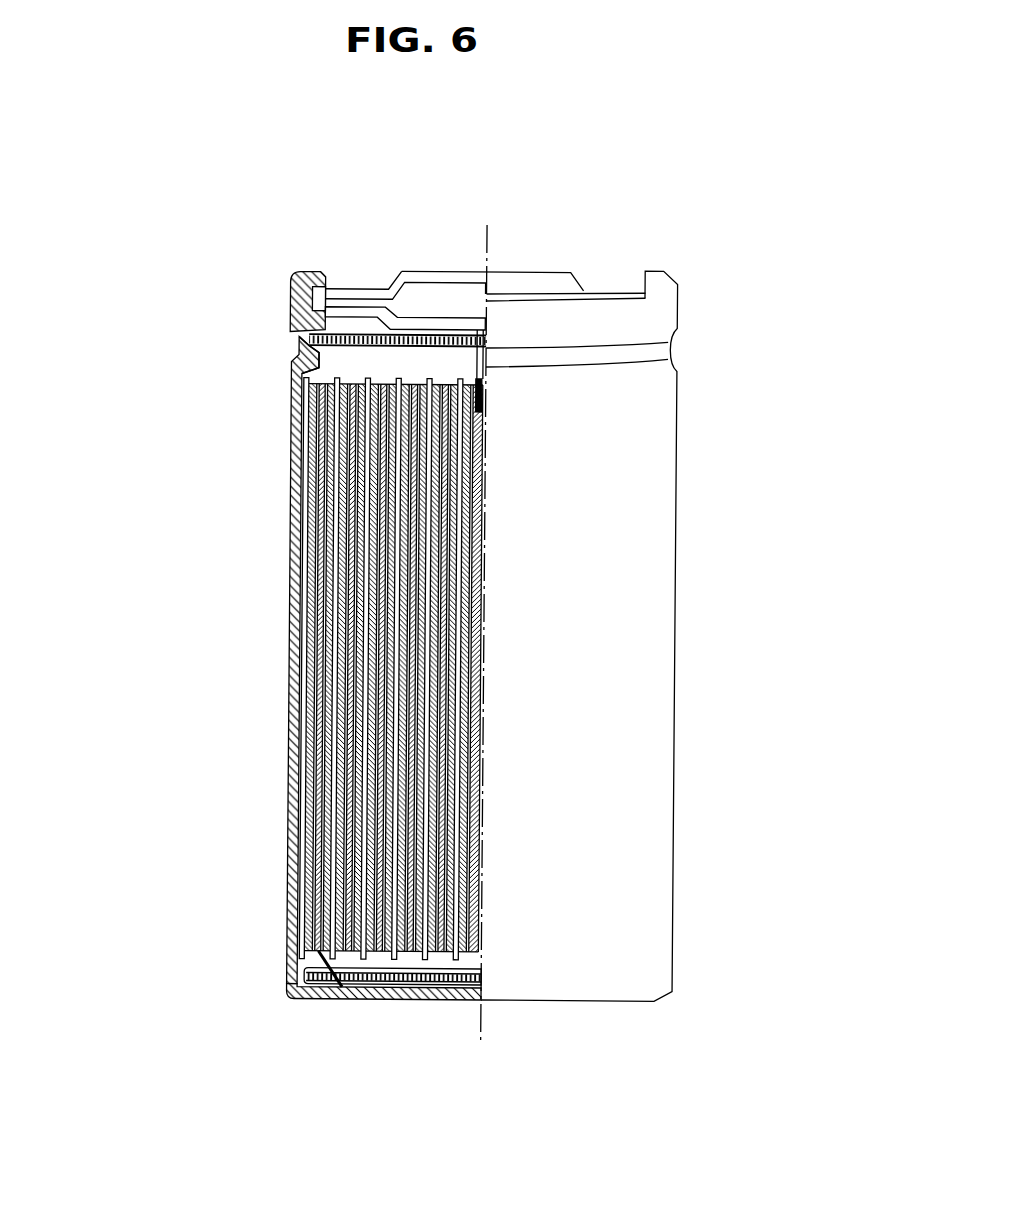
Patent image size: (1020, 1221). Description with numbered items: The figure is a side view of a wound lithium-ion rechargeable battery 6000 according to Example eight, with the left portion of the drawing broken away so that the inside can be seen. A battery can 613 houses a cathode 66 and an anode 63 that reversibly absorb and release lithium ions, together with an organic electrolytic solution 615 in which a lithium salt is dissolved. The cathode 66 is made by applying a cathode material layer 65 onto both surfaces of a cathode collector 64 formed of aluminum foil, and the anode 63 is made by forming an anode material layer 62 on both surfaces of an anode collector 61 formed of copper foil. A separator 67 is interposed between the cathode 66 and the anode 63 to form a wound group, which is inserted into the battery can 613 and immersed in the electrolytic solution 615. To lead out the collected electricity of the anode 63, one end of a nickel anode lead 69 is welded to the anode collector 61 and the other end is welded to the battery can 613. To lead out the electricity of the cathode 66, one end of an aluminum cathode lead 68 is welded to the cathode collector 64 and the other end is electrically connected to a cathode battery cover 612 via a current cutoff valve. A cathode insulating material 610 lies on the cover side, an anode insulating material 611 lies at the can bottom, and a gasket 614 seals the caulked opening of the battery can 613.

The rechargeable battery 6000 is at (604, 202).
The gasket 614 is at (292, 276).
The cathode battery cover 612 is at (350, 291).
The cathode lead 68 is at (477, 392).
The cathode insulating material 610 is at (302, 341).
The electrolytic solution 615 is at (293, 366).
The battery can 613 is at (289, 404).
The anode insulating material 611 is at (405, 1000).
The cathode 66 is at (212, 460).
The cathode collector 64 is at (350, 474).
The cathode material layer 65 is at (357, 570).
The anode 63 is at (212, 602).
The anode collector 61 is at (318, 617).
The anode material layer 62 is at (332, 708).
The separator 67 is at (340, 826).
The anode lead 69 is at (306, 967).